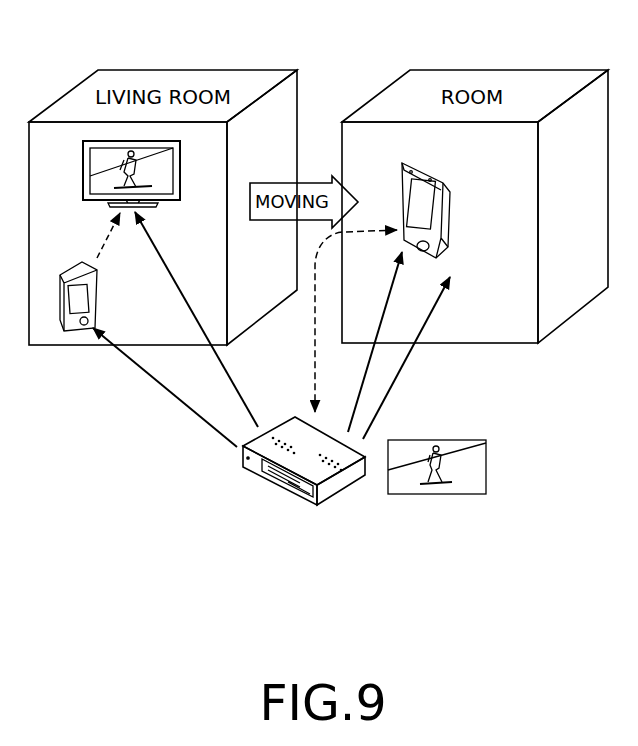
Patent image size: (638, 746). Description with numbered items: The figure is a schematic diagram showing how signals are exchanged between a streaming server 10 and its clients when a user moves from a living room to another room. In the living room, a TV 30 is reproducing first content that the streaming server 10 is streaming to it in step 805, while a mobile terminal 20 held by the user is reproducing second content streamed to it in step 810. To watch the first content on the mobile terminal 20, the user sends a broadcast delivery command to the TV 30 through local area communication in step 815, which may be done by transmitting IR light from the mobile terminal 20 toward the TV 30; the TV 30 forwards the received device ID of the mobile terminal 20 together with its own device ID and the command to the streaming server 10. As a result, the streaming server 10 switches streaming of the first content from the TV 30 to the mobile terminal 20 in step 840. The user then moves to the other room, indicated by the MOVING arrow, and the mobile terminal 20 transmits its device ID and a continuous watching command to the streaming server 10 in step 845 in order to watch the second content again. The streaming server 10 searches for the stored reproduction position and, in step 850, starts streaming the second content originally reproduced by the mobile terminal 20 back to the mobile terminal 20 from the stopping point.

The streaming server 10 is at (270, 482).
The mobile terminal 20 is at (453, 217).
The display device (TV) 30 is at (88, 141).
The streaming of first content to display device 805 is at (238, 377).
The streaming of second content to mobile terminal 810 is at (153, 380).
The broadcast delivery command transmission 815 is at (102, 242).
The streaming switch to mobile terminal 840 is at (368, 372).
The continuous watching command transmission 845 is at (368, 230).
The resumed streaming from stored reproduction position 850 is at (440, 305).